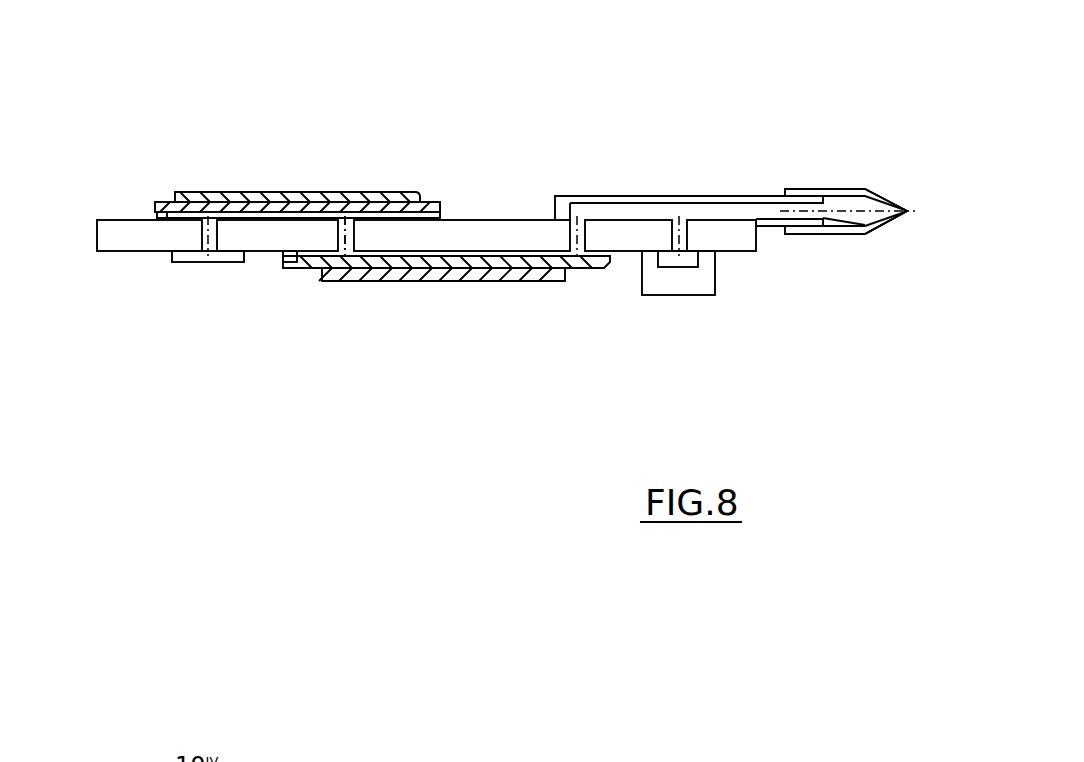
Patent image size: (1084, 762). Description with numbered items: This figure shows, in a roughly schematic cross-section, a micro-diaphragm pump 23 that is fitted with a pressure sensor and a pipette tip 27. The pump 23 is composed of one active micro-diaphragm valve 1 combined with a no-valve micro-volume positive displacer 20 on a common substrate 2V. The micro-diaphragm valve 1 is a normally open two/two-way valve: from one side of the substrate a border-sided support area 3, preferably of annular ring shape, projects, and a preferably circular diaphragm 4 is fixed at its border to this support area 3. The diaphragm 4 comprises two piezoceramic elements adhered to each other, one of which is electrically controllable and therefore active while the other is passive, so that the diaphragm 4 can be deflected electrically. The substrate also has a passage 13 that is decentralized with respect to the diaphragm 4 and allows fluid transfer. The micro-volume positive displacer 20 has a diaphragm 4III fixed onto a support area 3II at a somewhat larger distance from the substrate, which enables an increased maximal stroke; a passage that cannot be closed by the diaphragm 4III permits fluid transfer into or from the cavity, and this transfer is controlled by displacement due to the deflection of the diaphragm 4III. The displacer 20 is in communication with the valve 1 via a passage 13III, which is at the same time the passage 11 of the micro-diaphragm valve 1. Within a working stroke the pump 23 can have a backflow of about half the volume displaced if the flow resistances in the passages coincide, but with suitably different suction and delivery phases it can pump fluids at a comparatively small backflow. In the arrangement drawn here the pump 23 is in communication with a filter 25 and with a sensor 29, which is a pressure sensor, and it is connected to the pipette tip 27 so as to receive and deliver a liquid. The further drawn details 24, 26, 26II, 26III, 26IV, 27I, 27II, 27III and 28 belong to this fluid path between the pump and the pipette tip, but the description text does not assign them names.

The micro-diaphragm valve 1 is at (323, 192).
The substrate 2V is at (118, 233).
The support area 3 is at (152, 213).
The diaphragm 4 is at (231, 210).
The support area 3II is at (282, 263).
The diaphragm 4III is at (473, 273).
The passage 11 is at (347, 248).
The passage 13 is at (208, 252).
The passage 13III is at (577, 250).
The micro-volume positive displacer 20 is at (393, 282).
The micro-diaphragm pump 23 is at (424, 190).
The direction arrow 24 is at (472, 172).
The filter 25 is at (220, 260).
The sleeve 26 is at (613, 196).
The sleeve end wall 26II is at (555, 212).
The sleeve top wall 26III is at (735, 196).
The sleeve bottom wall 26IV is at (838, 224).
The pipette tip 27 is at (843, 188).
The nozzle bottom wall 27I is at (808, 233).
The nozzle tip orifice 27II is at (907, 211).
The nozzle cone 27III is at (880, 236).
The inner block 28 is at (681, 250).
The sensor 29 is at (677, 287).